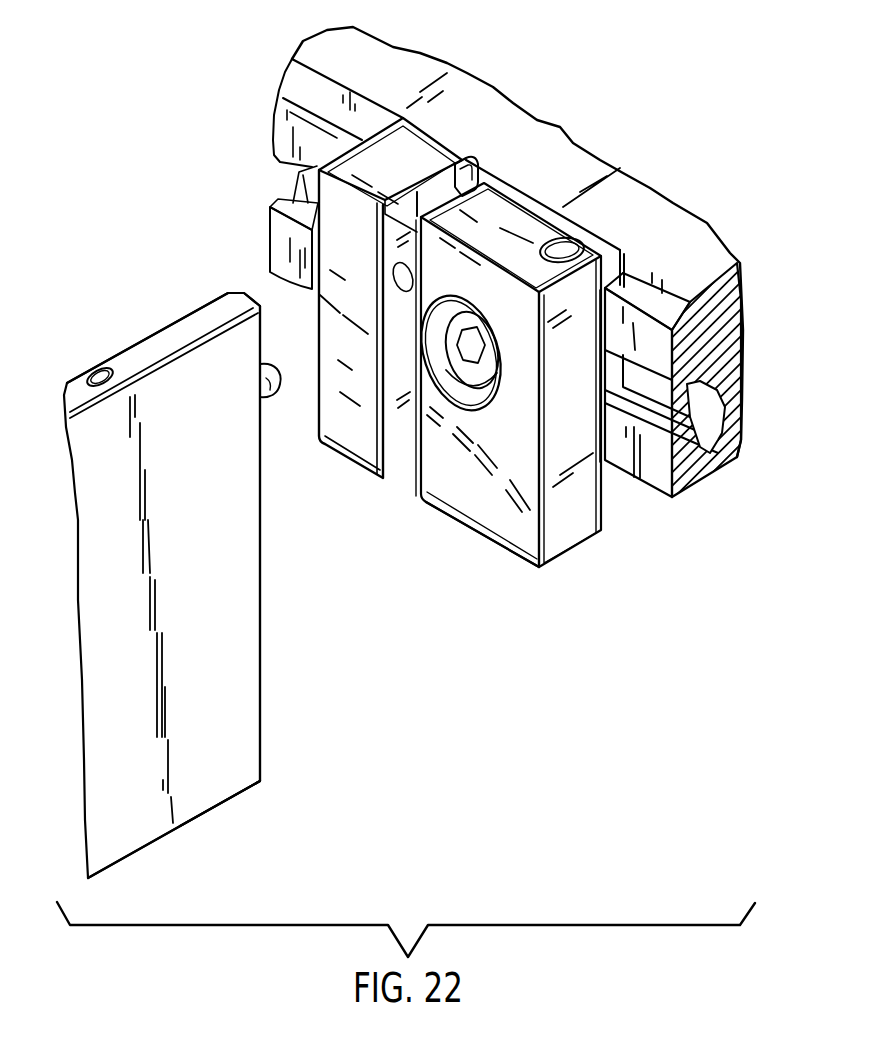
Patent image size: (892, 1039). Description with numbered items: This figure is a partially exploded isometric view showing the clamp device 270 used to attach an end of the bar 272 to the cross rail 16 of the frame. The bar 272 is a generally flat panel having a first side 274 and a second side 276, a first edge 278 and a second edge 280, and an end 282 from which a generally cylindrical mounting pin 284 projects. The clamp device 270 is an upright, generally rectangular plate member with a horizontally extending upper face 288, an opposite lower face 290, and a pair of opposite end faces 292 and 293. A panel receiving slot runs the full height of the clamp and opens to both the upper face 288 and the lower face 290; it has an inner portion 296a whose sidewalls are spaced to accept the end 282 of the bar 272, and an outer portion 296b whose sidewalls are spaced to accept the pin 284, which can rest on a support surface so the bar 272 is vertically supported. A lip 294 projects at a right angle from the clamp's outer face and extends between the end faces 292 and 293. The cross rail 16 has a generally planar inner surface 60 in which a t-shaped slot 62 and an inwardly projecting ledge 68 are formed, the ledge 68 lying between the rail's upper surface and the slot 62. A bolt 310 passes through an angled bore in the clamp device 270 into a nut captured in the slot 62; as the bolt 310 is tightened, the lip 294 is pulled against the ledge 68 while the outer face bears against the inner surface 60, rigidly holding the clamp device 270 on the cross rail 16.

The cross rail 16 is at (691, 499).
The inner surface 60 is at (622, 462).
The t-shaped slot 62 is at (712, 428).
The ledge 68 is at (667, 313).
The clamp device 270 is at (505, 403).
The bar 272 is at (218, 812).
The first side 274 is at (193, 318).
The second side 276 is at (230, 501).
The first edge 278 is at (147, 348).
The second edge 280 is at (130, 858).
The end 282 is at (262, 637).
The mounting pin 284 is at (268, 395).
The upper face 288 is at (390, 147).
The lower face 290 is at (470, 537).
The end face 292 is at (378, 269).
The end face 293 is at (583, 399).
The lip 294 is at (625, 283).
The inner portion 296a is at (413, 206).
The outer portion 296b is at (456, 177).
The bolt 310 is at (463, 370).